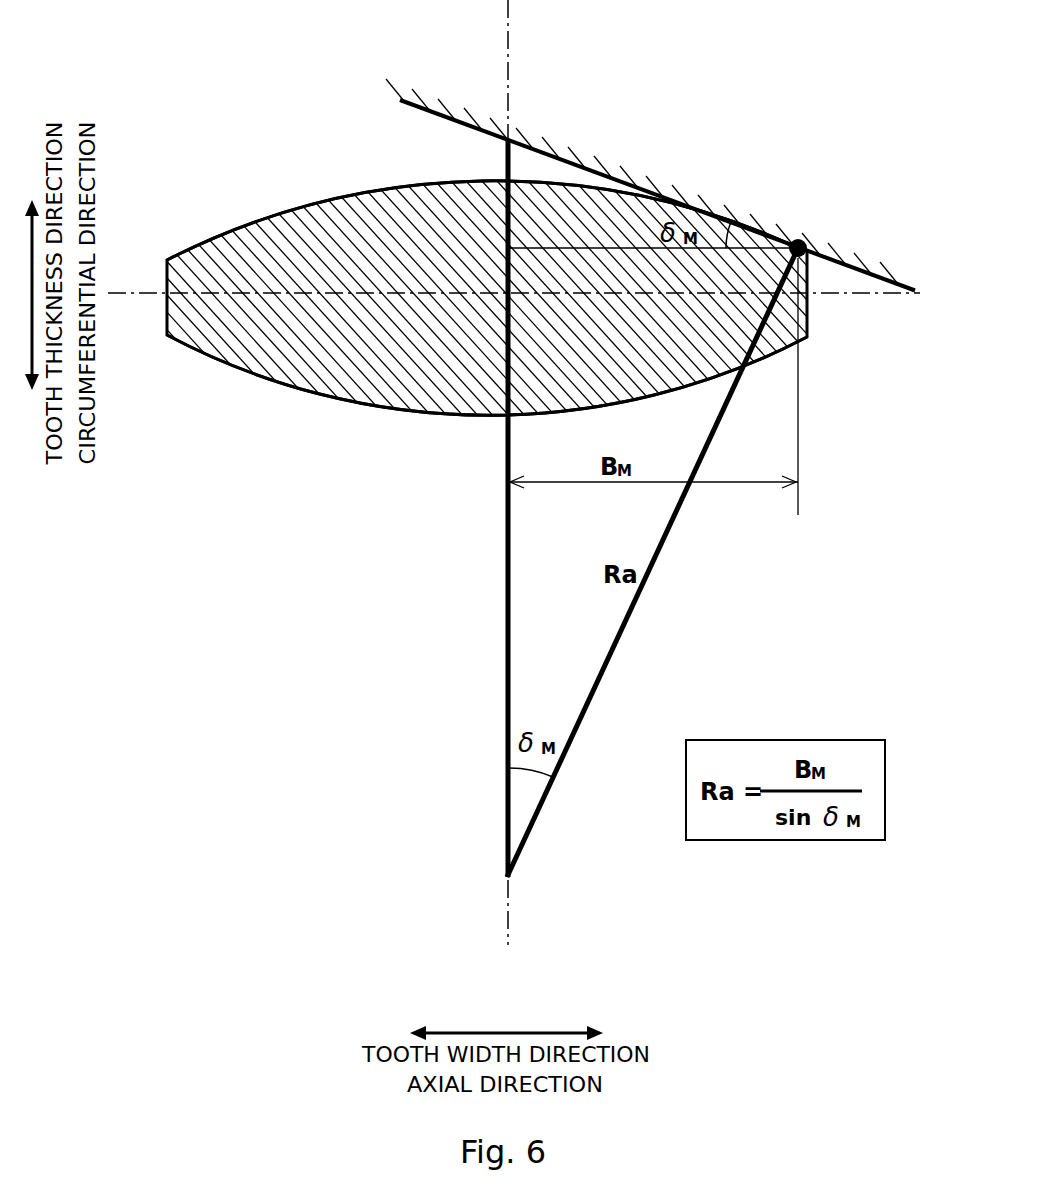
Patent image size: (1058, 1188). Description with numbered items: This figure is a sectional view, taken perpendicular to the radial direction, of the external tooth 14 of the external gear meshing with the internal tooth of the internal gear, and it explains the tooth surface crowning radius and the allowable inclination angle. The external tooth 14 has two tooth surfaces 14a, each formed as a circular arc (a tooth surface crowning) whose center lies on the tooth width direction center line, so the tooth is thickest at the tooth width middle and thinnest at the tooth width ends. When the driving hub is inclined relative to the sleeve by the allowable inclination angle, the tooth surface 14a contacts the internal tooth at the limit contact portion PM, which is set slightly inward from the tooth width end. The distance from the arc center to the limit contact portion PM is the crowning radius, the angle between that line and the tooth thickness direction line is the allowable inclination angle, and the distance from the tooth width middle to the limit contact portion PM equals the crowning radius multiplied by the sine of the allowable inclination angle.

The external tooth 14 is at (310, 227).
The tooth surface 14a is at (238, 227).
The limit contact portion PM is at (796, 240).